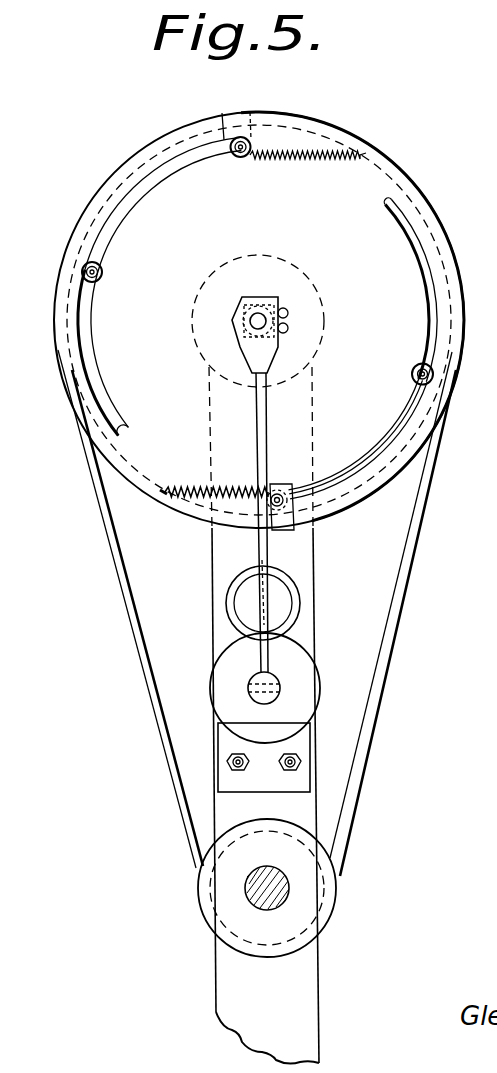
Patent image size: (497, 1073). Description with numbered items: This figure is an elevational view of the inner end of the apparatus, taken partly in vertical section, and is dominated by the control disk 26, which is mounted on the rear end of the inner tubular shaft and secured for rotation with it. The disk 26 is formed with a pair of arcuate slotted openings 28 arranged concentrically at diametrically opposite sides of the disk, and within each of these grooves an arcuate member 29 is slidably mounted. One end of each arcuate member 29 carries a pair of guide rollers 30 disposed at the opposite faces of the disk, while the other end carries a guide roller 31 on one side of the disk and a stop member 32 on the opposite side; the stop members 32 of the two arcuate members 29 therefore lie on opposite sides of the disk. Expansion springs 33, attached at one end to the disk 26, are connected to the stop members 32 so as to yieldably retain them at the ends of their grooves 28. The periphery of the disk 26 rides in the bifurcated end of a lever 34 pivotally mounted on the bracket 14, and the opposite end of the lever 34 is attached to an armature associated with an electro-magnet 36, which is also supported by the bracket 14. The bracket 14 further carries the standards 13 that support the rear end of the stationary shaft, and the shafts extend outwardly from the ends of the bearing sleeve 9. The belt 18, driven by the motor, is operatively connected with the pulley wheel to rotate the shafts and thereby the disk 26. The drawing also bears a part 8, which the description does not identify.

The brake band segment 8 is at (386, 206).
The bearing sleeve 9 is at (378, 469).
The standards 13 is at (268, 443).
The bracket 14 is at (280, 602).
The belt 18 is at (398, 638).
The control disk 26 is at (140, 232).
The arcuate slotted openings 28 is at (96, 380).
The arcuate member 29 is at (170, 172).
The guide rollers 30 is at (104, 277).
The guide roller 31 is at (236, 160).
The stop member 32 is at (288, 520).
The expansion springs 33 is at (300, 163).
The lever 34 is at (262, 650).
The electro-magnet 36 is at (300, 666).